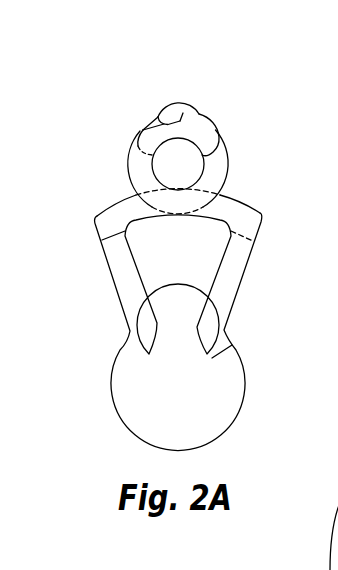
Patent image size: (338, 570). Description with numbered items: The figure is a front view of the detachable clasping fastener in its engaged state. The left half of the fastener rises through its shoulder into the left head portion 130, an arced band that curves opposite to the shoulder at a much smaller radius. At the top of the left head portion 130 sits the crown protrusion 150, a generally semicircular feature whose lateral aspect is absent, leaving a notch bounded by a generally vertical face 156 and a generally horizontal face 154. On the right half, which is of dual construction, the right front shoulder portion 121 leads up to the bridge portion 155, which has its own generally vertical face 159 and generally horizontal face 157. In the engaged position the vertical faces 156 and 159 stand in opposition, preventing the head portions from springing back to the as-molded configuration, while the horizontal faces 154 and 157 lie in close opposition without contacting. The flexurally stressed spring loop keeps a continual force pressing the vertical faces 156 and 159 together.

The right front shoulder portion 121 is at (182, 202).
The left head portion 130 is at (213, 165).
The crown protrusion 150 is at (187, 113).
The horizontal face 154 is at (152, 116).
The bridge portion 155 is at (161, 108).
The vertical face 156 is at (176, 108).
The horizontal face 157 is at (157, 121).
The vertical face 159 is at (178, 110).